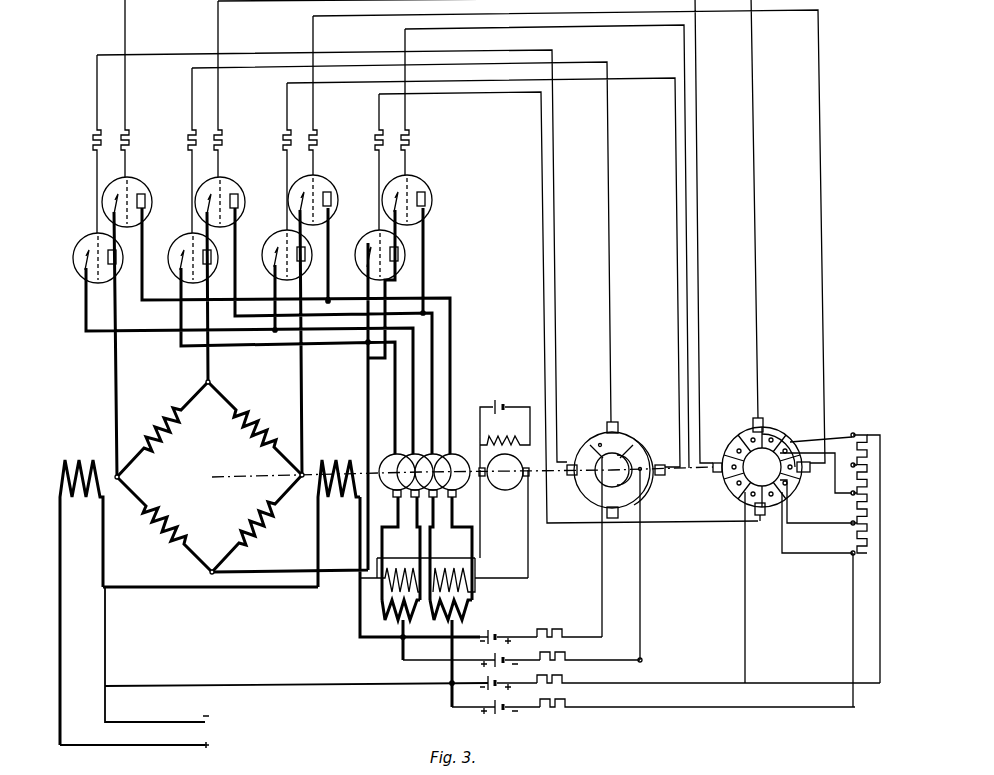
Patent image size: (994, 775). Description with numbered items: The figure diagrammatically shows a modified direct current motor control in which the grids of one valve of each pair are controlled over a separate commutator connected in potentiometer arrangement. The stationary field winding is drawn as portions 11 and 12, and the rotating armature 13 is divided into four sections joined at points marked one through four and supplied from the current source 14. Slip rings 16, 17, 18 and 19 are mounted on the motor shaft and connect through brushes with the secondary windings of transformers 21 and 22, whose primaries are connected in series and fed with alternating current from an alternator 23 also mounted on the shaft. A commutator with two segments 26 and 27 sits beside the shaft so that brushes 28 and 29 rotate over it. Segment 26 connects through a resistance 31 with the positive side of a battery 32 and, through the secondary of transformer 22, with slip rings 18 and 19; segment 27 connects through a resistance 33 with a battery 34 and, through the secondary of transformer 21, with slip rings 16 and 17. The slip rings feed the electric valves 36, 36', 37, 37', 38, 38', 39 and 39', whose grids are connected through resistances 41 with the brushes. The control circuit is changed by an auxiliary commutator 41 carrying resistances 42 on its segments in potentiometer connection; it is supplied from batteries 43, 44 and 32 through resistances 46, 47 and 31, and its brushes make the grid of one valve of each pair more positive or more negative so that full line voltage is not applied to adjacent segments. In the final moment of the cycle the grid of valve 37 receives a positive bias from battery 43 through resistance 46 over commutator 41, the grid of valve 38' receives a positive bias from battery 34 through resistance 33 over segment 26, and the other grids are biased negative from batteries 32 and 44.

The stationary field winding portion 11 is at (72, 497).
The stationary field winding portion 12 is at (328, 497).
The rotating armature 13 is at (218, 460).
The current source 14 is at (225, 732).
The slip ring 16 is at (392, 456).
The slip ring 17 is at (411, 456).
The slip ring 18 is at (429, 456).
The slip ring 19 is at (448, 456).
The transformer 21 is at (388, 597).
The transformer 22 is at (465, 591).
The alternator 23 is at (484, 455).
The commutator segment 26 is at (615, 540).
The commutator segment 27 is at (645, 493).
The brush 28 is at (607, 428).
The brush 29 is at (572, 477).
The resistance 31 is at (558, 701).
The battery 32 is at (503, 704).
The resistance 33 is at (555, 630).
The battery 34 is at (497, 634).
The electric valve 36 is at (425, 200).
The electric valve 36' is at (405, 253).
The electric valve 37 is at (331, 200).
The electric valve 37' is at (311, 253).
The electric valve 38 is at (237, 202).
The electric valve 38' is at (216, 254).
The electric valve 39 is at (144, 202).
The electric valve 39' is at (122, 254).
The auxiliary commutator 41 is at (735, 502).
The resistances 42 is at (852, 508).
The battery 43 is at (497, 680).
The battery 44 is at (503, 656).
The resistance 46 is at (560, 678).
The resistance 47 is at (558, 653).